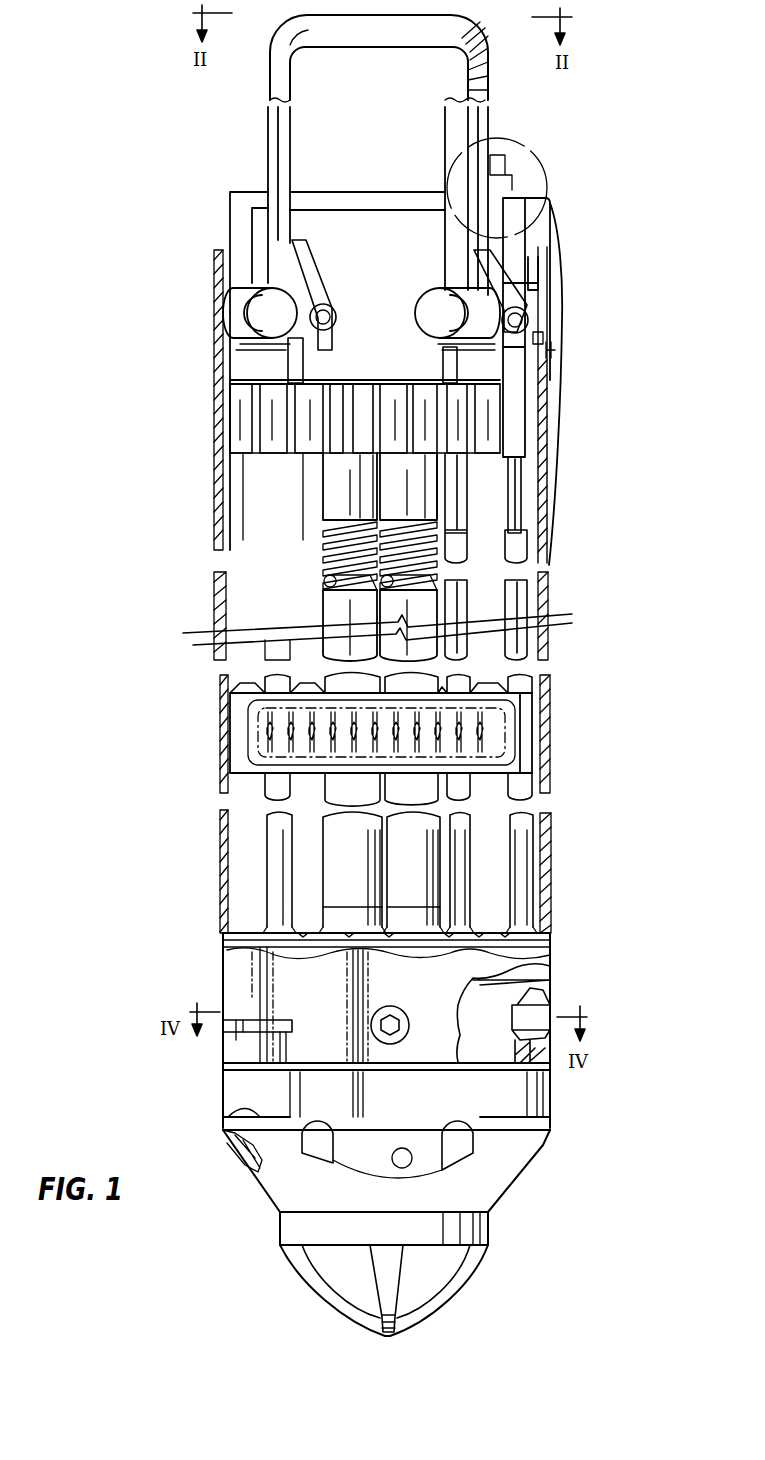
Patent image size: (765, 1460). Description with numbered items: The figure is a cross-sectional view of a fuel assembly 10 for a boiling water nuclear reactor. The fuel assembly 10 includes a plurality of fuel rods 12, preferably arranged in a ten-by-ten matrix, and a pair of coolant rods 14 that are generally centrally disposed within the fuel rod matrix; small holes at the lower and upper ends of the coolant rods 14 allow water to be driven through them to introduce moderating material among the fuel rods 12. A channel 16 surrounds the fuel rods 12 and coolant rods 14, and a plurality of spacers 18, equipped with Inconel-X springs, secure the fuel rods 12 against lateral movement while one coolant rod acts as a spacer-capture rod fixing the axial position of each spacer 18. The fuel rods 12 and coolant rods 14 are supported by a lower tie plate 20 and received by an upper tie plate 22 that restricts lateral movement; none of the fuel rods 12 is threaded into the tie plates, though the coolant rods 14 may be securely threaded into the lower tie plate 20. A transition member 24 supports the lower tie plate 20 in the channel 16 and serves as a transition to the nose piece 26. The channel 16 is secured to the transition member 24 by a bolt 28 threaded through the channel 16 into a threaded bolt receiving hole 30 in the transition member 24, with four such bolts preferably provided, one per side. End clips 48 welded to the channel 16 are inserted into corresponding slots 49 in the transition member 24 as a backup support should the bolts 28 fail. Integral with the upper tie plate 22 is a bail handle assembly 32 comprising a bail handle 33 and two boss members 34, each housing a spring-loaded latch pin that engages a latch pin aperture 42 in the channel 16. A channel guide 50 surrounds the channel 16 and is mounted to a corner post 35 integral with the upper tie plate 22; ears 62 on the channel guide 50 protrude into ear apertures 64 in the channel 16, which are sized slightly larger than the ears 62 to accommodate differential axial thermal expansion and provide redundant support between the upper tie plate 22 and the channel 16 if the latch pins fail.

The fuel assembly 10 is at (692, 502).
The fuel rods 12 is at (510, 597).
The coolant rods 14 is at (387, 493).
The channel 16 is at (220, 705).
The spacers 18 is at (240, 750).
The lower tie plate 20 is at (500, 943).
The upper tie plate 22 is at (518, 408).
The transition member 24 is at (540, 1092).
The nose piece 26 is at (518, 1162).
The bolt 28 is at (378, 1025).
The threaded bolt receiving holes 30 is at (550, 988).
The bail handle assembly 32 is at (205, 146).
The bail handle 33 is at (485, 128).
The boss members 34 is at (240, 307).
The corner post 35 is at (512, 170).
The latch pin aperture 42 is at (530, 293).
The end clips 48 is at (227, 1033).
The slots 49 is at (247, 1028).
The channel guide 50 is at (558, 307).
The ears 62 is at (547, 340).
The ear apertures 64 is at (558, 350).